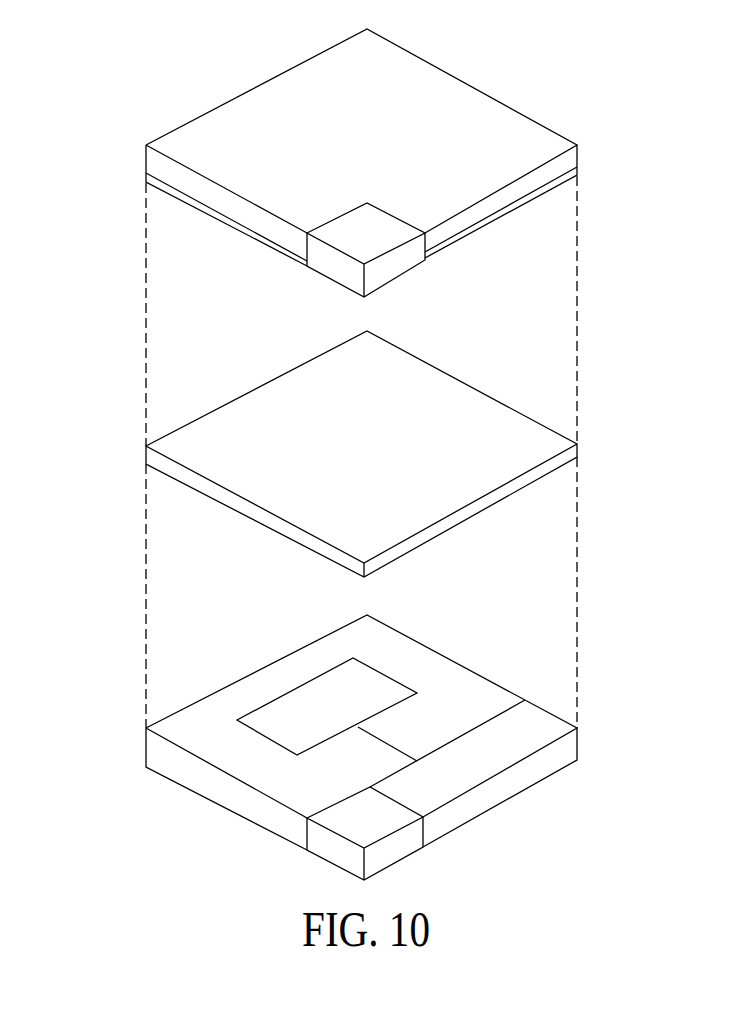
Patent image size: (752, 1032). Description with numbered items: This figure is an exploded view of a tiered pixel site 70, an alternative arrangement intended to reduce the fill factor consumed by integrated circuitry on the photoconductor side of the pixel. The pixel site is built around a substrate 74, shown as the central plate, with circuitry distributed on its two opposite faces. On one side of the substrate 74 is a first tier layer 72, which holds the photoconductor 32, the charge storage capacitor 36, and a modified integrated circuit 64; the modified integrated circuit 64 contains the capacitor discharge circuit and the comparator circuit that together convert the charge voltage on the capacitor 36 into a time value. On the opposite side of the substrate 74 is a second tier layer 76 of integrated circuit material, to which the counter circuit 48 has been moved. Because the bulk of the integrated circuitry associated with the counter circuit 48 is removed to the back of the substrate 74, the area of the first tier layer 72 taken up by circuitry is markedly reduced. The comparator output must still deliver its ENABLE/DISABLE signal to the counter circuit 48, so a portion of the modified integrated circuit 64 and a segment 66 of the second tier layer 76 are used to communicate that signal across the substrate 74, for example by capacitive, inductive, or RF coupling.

The tiered pixel site 70 is at (63, 123).
The first tier layer 72 is at (480, 66).
The photoconductor 32 is at (267, 112).
The capacitor 36 is at (580, 168).
The modified integrated circuit 64 is at (362, 233).
The substrate 74 is at (410, 360).
The second tier layer 76 is at (550, 770).
The counter circuit 48 is at (297, 713).
The segment 66 is at (362, 825).